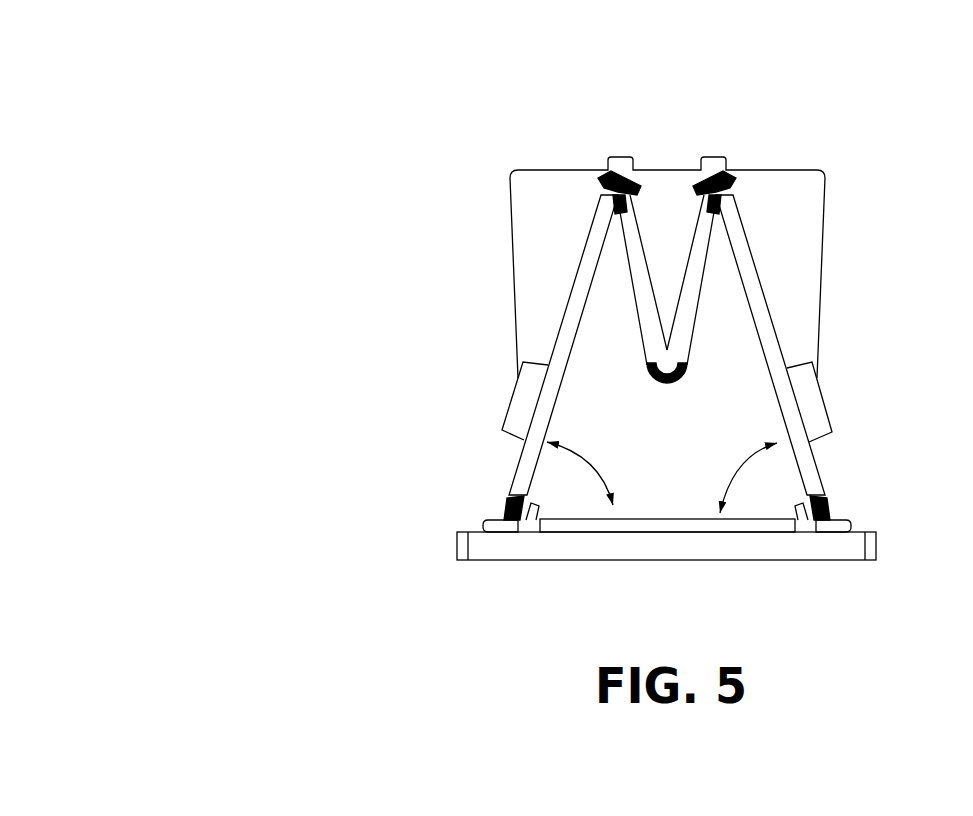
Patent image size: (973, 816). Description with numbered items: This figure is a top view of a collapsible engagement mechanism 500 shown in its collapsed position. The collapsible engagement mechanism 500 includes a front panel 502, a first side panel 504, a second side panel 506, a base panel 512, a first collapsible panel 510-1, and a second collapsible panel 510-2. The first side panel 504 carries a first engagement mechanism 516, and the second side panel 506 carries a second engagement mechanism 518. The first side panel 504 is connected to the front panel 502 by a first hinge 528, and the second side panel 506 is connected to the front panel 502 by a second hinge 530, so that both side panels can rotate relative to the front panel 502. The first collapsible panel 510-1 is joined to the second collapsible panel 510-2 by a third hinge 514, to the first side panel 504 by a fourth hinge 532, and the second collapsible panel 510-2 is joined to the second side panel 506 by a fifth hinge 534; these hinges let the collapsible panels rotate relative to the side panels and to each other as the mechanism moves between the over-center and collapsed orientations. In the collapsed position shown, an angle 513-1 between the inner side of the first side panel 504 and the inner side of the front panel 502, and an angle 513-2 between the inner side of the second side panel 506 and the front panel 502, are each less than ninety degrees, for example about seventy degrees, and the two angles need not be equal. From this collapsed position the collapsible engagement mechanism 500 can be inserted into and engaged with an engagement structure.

The collapsible engagement mechanism 500 is at (322, 97).
The front panel 502 is at (665, 549).
The first side panel 504 is at (556, 348).
The second side panel 506 is at (779, 340).
The first collapsible panel 510-1 is at (637, 238).
The second collapsible panel 510-2 is at (697, 238).
The base panel 512 is at (540, 275).
The angle 513-1 is at (590, 468).
The angle 513-2 is at (745, 470).
The third hinge 514 is at (670, 388).
The first engagement mechanism 516 is at (520, 410).
The second engagement mechanism 518 is at (822, 416).
The first hinge 528 is at (510, 505).
The second hinge 530 is at (822, 508).
The fourth hinge 532 is at (597, 180).
The fifth hinge 534 is at (690, 188).